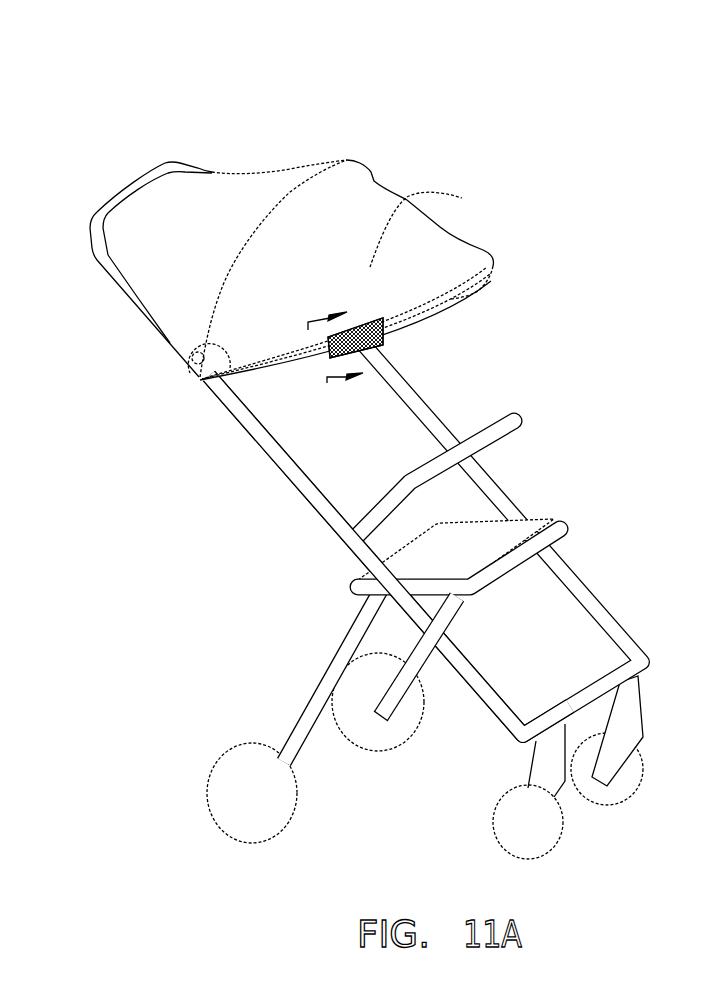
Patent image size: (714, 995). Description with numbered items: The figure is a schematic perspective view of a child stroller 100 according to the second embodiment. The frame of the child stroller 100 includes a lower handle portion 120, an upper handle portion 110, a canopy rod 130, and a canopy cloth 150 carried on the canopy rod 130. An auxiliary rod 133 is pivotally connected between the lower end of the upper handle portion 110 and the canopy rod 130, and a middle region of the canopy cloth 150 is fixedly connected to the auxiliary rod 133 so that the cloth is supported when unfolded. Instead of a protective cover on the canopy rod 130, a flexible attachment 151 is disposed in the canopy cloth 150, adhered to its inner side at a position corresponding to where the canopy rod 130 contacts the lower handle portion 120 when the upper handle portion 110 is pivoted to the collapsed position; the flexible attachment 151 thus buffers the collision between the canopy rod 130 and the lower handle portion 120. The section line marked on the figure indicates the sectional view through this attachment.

The child stroller 100 is at (52, 39).
The upper handle portion 110 is at (153, 170).
The lower handle portion 120 is at (244, 427).
The canopy rod 130 is at (460, 300).
The auxiliary rod 133 is at (283, 195).
The canopy cloth 150 is at (431, 229).
The flexible attachment 151 is at (380, 347).